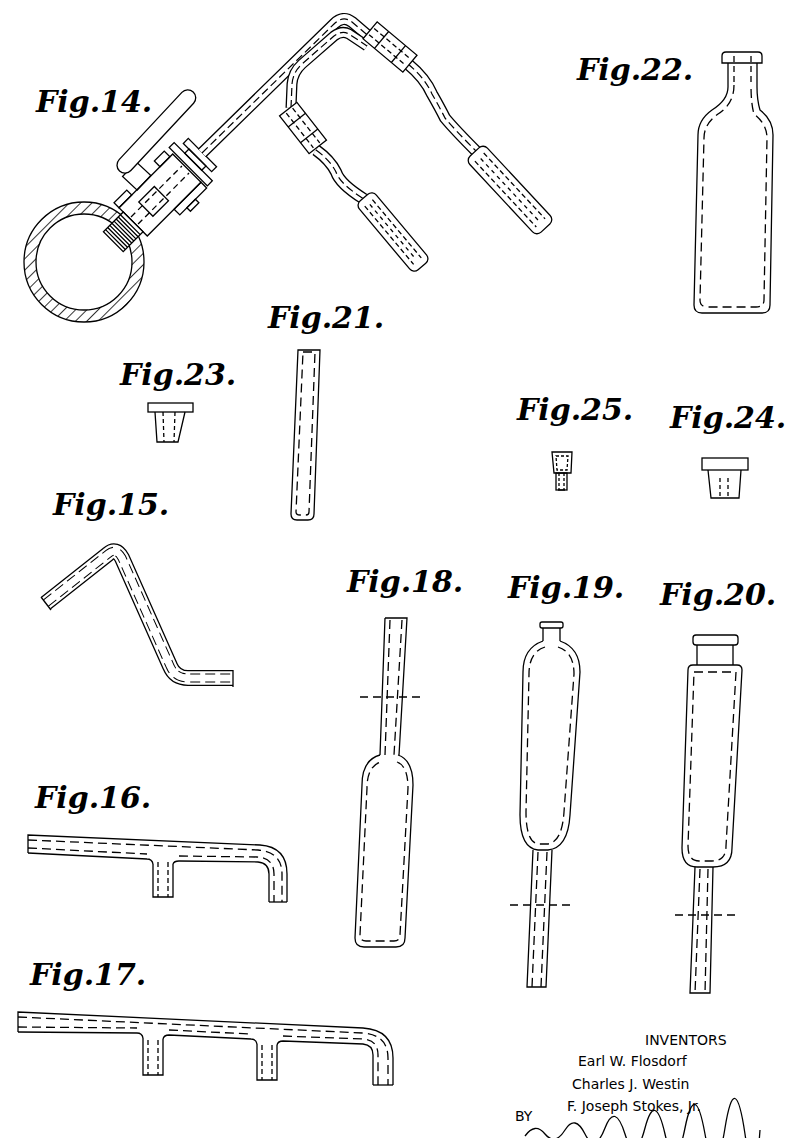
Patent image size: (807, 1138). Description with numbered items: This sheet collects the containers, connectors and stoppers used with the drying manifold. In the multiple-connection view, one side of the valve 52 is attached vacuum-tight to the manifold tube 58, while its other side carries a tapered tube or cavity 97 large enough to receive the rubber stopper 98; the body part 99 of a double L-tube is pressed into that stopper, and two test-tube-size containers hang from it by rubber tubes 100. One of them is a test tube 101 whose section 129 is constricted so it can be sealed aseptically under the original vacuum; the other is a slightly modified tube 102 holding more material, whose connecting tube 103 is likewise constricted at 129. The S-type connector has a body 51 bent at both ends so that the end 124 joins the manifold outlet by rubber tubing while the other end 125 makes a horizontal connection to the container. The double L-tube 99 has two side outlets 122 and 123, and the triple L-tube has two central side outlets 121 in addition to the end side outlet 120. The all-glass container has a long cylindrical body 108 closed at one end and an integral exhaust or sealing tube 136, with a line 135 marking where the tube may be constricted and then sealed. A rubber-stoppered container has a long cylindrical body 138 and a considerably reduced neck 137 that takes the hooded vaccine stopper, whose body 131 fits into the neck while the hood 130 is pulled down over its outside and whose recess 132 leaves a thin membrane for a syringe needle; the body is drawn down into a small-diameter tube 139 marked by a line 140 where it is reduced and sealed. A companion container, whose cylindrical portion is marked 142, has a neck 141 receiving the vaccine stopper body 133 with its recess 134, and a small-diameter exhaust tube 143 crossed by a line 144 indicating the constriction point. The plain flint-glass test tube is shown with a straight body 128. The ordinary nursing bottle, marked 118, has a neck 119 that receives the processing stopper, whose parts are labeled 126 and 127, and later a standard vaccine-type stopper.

In FIG. 14, the valve 52 is at (124, 180).
In FIG. 14, the manifold tube 58 is at (146, 271).
In FIG. 14, the tapered tube 97 is at (201, 187).
In FIG. 14, the rubber stopper 98 is at (216, 165).
In FIG. 14, the double L-tube 99 is at (304, 48).
In FIG. 16, the double L-tube 99 is at (100, 859).
In FIG. 14, the rubber tubes 100 is at (388, 68).
In FIG. 14, the test tube 101 is at (381, 220).
In FIG. 14, the modified tube 102 is at (513, 188).
In FIG. 14, the connecting tube 103 is at (463, 140).
In FIG. 14, the constricted section 129 is at (427, 102).
In FIG. 22, the bottle body 118 is at (700, 197).
In FIG. 22, the neck 119 is at (737, 70).
In FIG. 17, the neck 119 is at (72, 1036).
In FIG. 17, the end side outlet 120 is at (373, 1073).
In FIG. 17, the central side outlets 121 is at (257, 1066).
In FIG. 16, the side outlet 122 is at (267, 894).
In FIG. 16, the side outlet 123 is at (175, 886).
In FIG. 15, the tube end 124 is at (66, 600).
In FIG. 15, the tube end 125 is at (210, 668).
In FIG. 15, the glass connector body 51 is at (153, 592).
In FIG. 23, the stopper body 126 is at (174, 424).
In FIG. 23, the stopper flange 127 is at (153, 416).
In FIG. 21, the straight body 128 is at (319, 437).
In FIG. 25, the hood 130 is at (553, 458).
In FIG. 25, the stopper body 131 is at (555, 478).
In FIG. 25, the recess 132 is at (562, 491).
In FIG. 24, the stopper body 133 is at (707, 477).
In FIG. 24, the recess 134 is at (718, 492).
In FIG. 18, the cylindrical body 108 is at (413, 853).
In FIG. 18, the line 135 is at (409, 697).
In FIG. 18, the exhaust tube 136 is at (403, 738).
In FIG. 19, the neck 137 is at (547, 622).
In FIG. 19, the cylindrical body 138 is at (577, 698).
In FIG. 19, the small diameter tube 139 is at (553, 870).
In FIG. 19, the line 140 is at (557, 908).
In FIG. 20, the neck 141 is at (712, 635).
In FIG. 20, the vial body 142 is at (686, 753).
In FIG. 20, the exhaust tube 143 is at (697, 895).
In FIG. 20, the line 144 is at (687, 916).